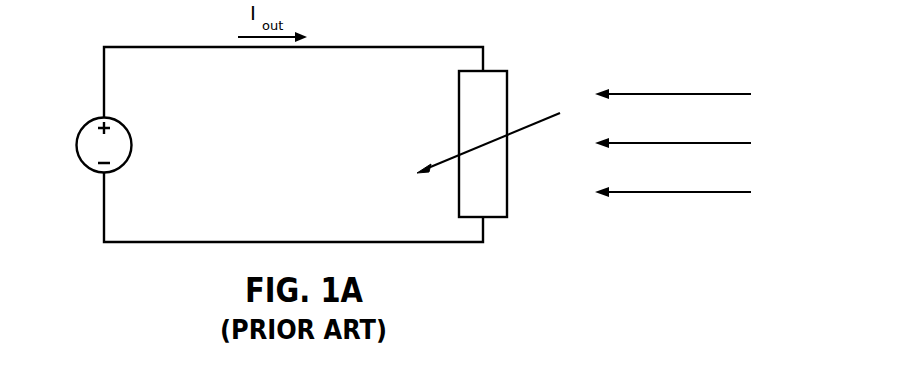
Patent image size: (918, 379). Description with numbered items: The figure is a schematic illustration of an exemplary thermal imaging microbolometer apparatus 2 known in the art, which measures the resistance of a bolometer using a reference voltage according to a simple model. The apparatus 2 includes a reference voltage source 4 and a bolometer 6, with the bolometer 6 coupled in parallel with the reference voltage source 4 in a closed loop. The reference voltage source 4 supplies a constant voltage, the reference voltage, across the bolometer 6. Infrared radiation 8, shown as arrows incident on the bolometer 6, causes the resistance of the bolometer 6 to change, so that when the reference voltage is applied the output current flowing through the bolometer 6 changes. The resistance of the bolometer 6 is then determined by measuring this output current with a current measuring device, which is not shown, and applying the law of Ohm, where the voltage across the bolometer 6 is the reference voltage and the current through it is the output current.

The thermal imaging microbolometer apparatus 2 is at (141, 264).
The reference voltage source 4 is at (81, 168).
The bolometer 6 is at (507, 83).
The infrared radiation 8 is at (693, 192).